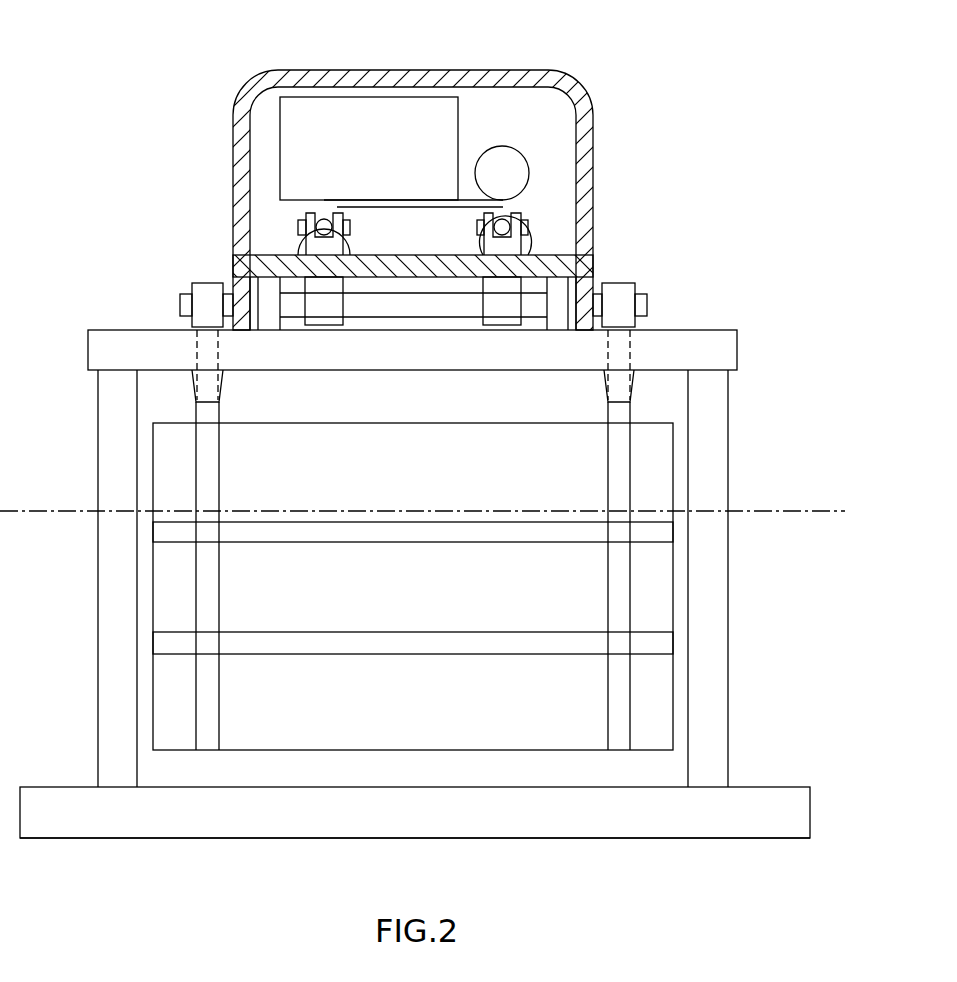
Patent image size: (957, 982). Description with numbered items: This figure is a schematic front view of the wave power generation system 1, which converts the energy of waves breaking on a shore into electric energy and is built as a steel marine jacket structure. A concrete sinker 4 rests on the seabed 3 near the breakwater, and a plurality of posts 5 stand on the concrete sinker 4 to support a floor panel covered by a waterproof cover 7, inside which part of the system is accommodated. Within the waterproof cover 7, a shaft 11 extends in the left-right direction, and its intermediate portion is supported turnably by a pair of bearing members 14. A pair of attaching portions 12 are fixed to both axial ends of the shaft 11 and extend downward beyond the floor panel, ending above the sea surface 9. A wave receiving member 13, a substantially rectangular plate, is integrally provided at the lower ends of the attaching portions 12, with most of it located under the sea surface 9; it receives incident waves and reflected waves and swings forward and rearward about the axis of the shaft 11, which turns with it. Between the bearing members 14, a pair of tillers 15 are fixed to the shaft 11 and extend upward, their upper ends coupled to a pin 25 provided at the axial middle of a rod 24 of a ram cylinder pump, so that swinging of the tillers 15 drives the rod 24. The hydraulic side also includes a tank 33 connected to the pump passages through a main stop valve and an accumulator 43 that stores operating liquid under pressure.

The wave power generation system 1 is at (430, 177).
The seabed 3 is at (496, 832).
The concrete sinker 4 is at (447, 838).
The posts 5 is at (107, 428).
The waterproof cover 7 is at (578, 103).
The sea surface 9 is at (547, 507).
The shaft 11 is at (411, 304).
The attaching portions 12 is at (210, 298).
The wave receiving member 13 is at (436, 432).
The bearing members 14 is at (268, 322).
The tillers 15 is at (340, 242).
The rod 24 is at (325, 220).
The pin 25 is at (299, 229).
The tank 33 is at (400, 108).
The accumulator 43 is at (512, 167).